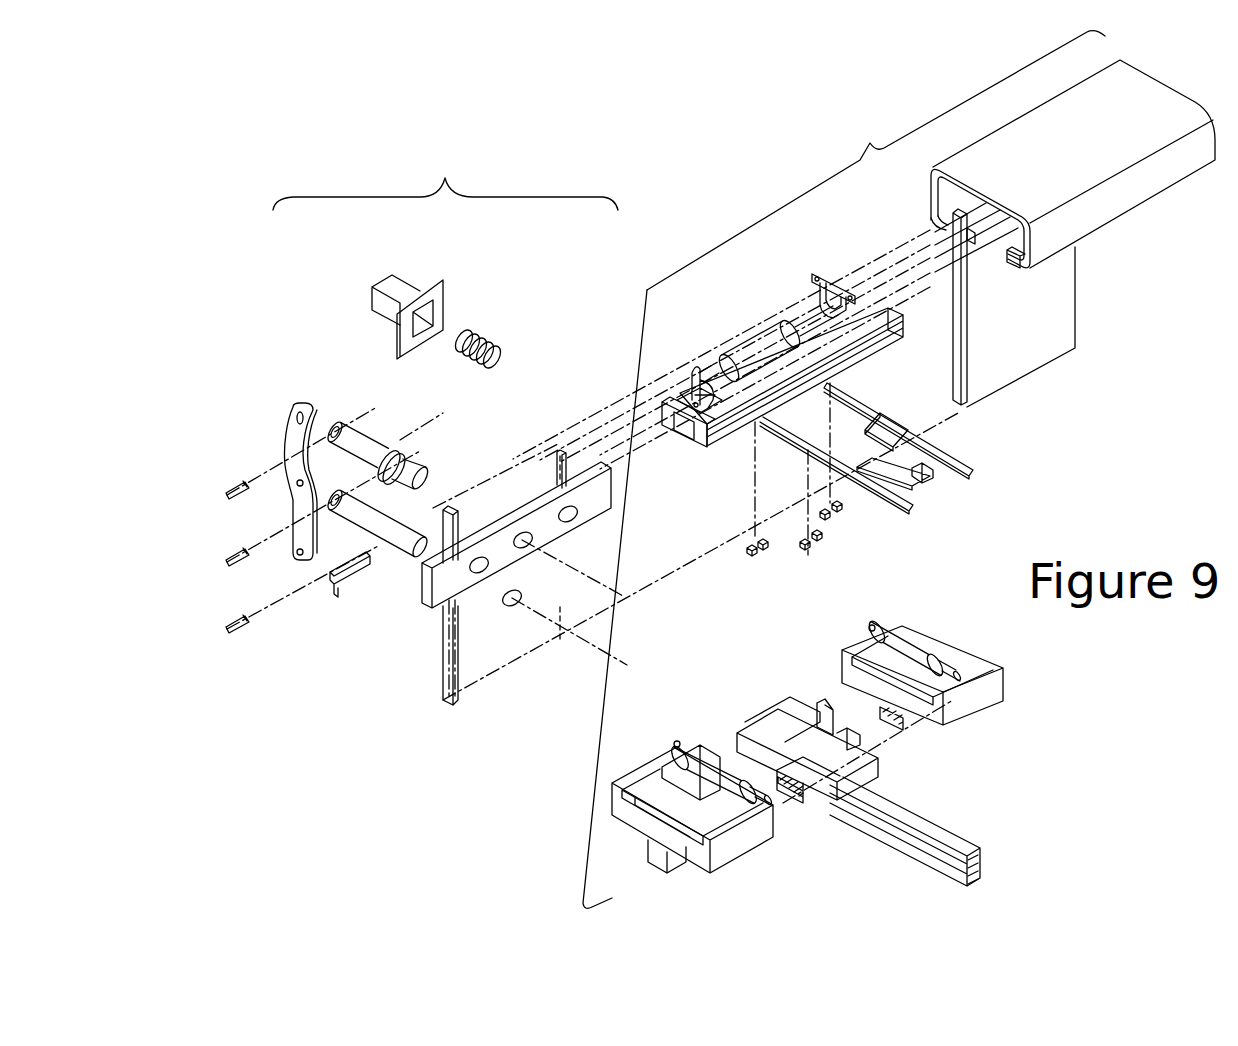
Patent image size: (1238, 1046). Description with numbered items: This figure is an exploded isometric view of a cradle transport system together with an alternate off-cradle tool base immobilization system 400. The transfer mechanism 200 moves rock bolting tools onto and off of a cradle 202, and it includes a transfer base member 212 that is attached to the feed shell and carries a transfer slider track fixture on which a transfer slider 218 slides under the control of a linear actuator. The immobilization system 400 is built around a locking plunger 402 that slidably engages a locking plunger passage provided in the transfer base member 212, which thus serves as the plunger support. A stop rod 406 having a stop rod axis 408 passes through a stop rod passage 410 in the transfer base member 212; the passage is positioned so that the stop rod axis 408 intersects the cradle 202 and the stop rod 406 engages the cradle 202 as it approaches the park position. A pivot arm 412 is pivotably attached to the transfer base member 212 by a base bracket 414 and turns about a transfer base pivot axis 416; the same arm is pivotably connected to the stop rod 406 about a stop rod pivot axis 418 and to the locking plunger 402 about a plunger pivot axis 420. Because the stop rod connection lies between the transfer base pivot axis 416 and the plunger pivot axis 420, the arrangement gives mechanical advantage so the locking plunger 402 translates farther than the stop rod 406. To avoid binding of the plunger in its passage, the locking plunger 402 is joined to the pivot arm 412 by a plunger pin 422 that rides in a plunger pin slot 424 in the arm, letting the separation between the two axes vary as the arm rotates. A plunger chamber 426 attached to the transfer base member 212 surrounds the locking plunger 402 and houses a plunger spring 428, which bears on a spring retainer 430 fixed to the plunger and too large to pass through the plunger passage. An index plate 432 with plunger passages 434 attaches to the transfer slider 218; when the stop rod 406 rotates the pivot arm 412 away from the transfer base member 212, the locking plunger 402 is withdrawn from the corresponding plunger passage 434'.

The transfer mechanism 200 is at (847, 130).
The cradle 202 is at (867, 777).
The transfer base member 212 is at (1050, 348).
The transfer slider 218 is at (693, 450).
The immobilization system 400 is at (450, 160).
The locking plunger 402 is at (418, 475).
The stop rod 406 is at (387, 540).
The stop rod axis 408 is at (521, 607).
The stop rod passage 410 is at (512, 606).
The pivot arm 412 is at (297, 542).
The base bracket 414 is at (335, 590).
The transfer base pivot axis 416 is at (273, 606).
The stop rod pivot axis 418 is at (268, 540).
The plunger pivot axis 420 is at (270, 467).
The plunger pin 422 is at (217, 477).
The plunger pin slot 424 is at (297, 407).
The plunger chamber 426 is at (440, 297).
The plunger spring 428 is at (502, 348).
The spring retainer 430 is at (387, 452).
The index plate 432 is at (442, 588).
The plunger passages 434 is at (541, 573).
The plunger passage 434' is at (490, 477).